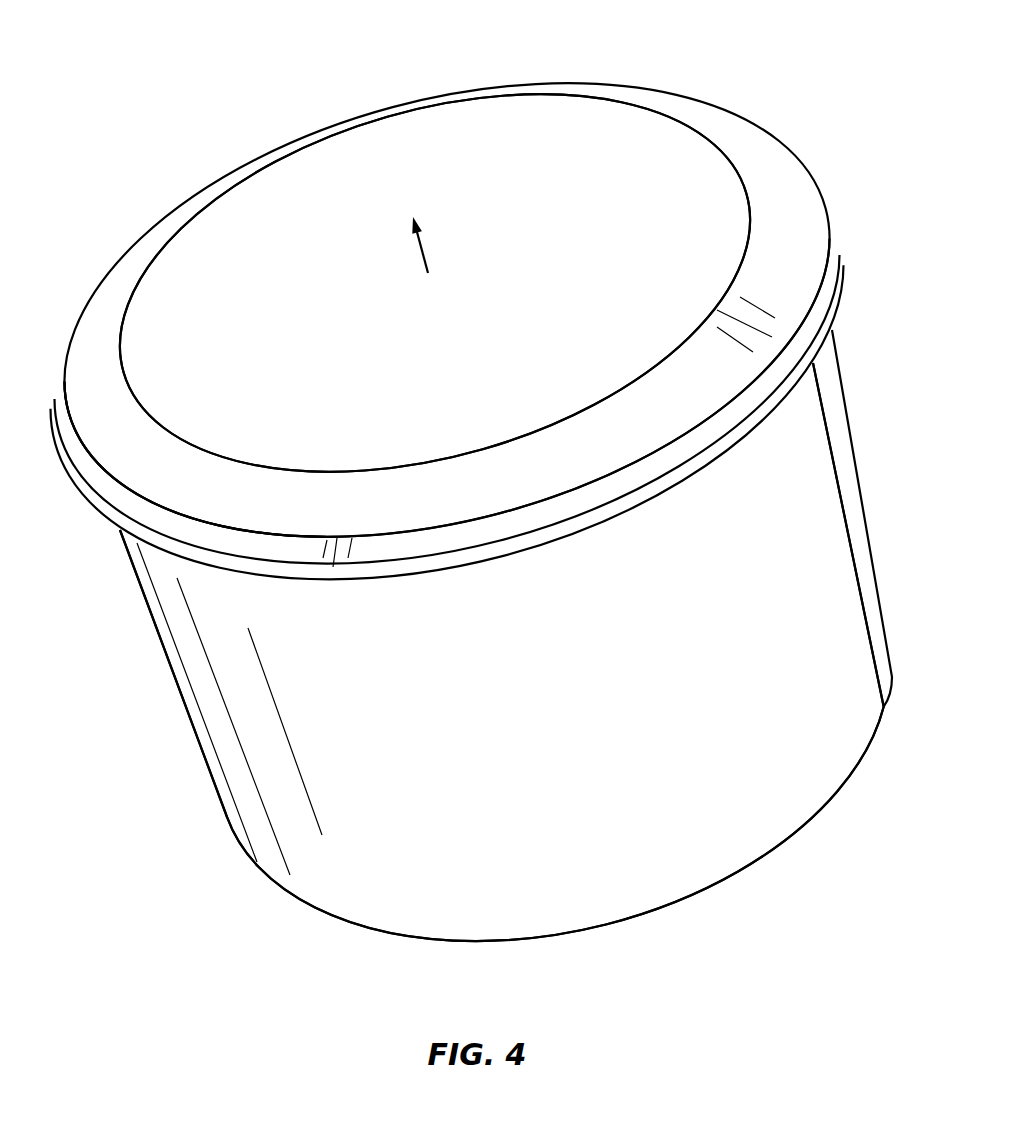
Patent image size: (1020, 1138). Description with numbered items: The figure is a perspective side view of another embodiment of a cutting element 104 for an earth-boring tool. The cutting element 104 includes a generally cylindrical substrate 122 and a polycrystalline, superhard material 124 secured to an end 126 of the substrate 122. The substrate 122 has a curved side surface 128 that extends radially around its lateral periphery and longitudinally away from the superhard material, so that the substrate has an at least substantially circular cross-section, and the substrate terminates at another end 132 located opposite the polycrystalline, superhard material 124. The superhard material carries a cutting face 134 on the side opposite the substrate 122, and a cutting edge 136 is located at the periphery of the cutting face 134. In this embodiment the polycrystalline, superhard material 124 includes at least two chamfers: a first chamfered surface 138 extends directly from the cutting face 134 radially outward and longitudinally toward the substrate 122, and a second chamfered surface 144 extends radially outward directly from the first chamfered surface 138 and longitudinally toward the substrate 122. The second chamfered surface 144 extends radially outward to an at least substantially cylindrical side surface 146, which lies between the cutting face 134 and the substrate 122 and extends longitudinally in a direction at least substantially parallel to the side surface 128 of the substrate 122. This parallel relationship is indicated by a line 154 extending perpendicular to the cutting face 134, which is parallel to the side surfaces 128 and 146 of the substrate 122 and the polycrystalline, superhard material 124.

The cutting element 104 is at (177, 138).
The substrate 122 is at (850, 443).
The polycrystalline, superhard material 124 is at (783, 223).
The end of the substrate 126 is at (601, 530).
The curved side surface 128 is at (303, 662).
The another end of the substrate 132 is at (787, 843).
The cutting face 134 is at (436, 153).
The cutting edge 136 is at (132, 287).
The first chamfered surface 138 is at (108, 430).
The second chamfered surface 144 is at (124, 509).
The cylindrical side surface 146 is at (516, 548).
The line perpendicular to the cutting face 154 is at (423, 253).